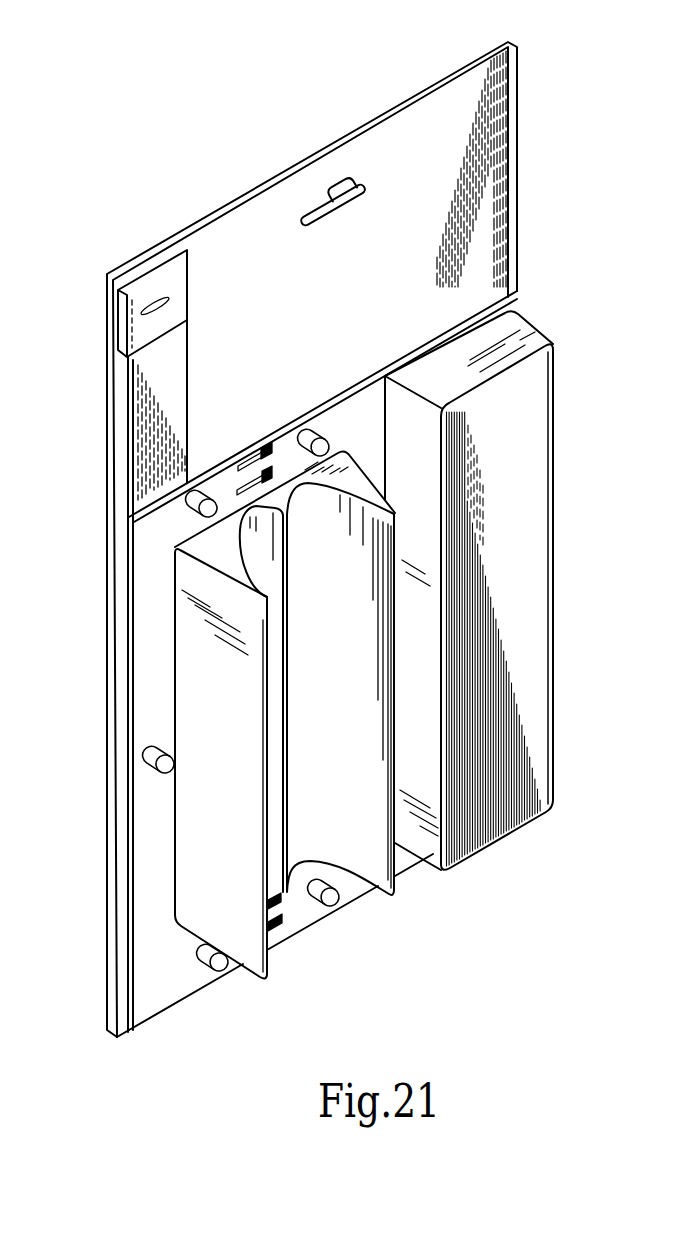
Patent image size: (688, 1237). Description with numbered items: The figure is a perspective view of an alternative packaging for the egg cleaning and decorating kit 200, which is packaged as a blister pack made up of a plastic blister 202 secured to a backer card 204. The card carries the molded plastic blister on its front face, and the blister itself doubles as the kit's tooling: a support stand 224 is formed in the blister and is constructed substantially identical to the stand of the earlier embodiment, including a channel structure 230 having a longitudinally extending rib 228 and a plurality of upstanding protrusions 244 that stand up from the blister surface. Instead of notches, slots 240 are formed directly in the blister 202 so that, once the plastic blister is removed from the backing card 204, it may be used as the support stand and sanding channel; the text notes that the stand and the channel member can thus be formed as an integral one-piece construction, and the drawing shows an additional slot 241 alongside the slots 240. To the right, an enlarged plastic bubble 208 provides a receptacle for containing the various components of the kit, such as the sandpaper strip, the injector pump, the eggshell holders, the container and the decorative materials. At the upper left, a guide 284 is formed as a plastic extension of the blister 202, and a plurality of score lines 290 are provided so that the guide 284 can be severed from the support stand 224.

The cleaning and decorating kit 200 is at (346, 543).
The plastic blister 202 is at (393, 661).
The backer card 204 is at (396, 106).
The enlarged plastic bubble 208 is at (531, 684).
The support stand 224 is at (212, 679).
The longitudinally extending rib 228 is at (289, 597).
The channel structure 230 is at (360, 853).
The slots 240 is at (268, 445).
The slot 241 is at (278, 455).
The upstanding protrusions 244 is at (190, 490).
The guide 284 is at (172, 281).
The score lines 290 is at (140, 297).